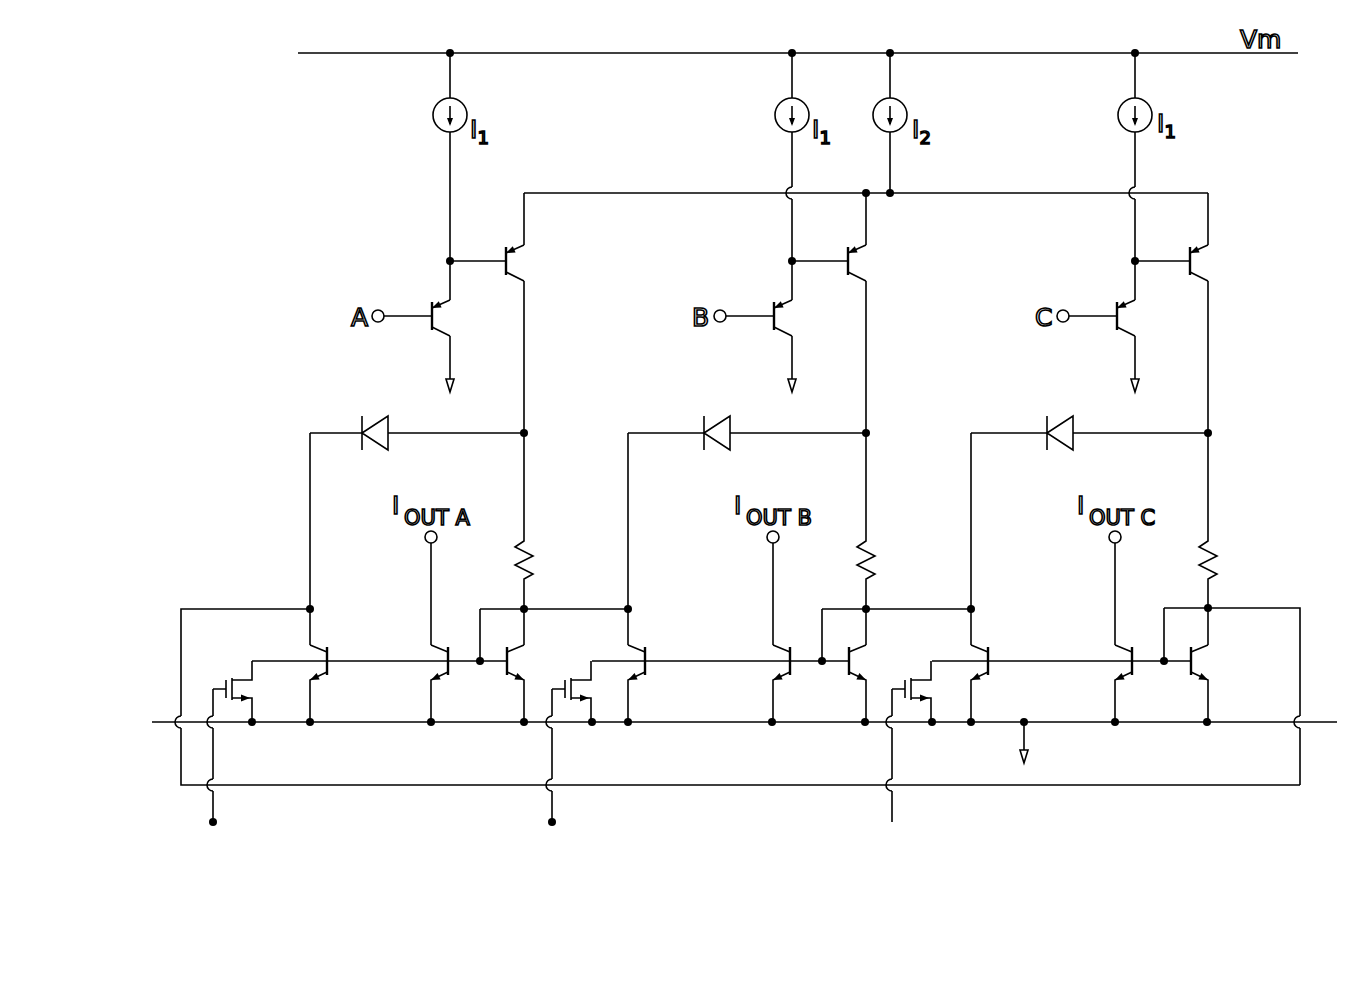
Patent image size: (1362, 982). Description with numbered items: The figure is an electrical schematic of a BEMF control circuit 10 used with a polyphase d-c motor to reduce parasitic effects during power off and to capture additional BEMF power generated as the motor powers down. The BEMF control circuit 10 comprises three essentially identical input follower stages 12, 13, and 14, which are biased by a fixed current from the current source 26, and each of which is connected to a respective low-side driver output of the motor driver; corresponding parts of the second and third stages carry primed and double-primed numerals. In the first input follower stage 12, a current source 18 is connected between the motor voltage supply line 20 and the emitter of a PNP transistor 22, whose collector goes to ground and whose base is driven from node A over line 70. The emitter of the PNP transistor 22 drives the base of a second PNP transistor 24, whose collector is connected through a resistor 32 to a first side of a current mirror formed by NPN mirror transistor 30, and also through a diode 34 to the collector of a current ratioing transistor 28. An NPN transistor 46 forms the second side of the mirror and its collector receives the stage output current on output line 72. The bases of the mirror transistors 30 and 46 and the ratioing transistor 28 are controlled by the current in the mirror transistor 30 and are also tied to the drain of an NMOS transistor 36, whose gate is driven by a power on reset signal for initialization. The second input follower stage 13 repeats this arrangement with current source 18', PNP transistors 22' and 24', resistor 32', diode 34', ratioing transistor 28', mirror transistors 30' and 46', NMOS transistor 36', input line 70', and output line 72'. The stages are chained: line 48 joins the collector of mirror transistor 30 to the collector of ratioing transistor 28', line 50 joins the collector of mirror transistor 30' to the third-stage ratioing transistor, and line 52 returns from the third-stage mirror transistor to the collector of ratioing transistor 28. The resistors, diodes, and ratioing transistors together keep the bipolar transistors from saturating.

The BEMF control circuit 10 is at (1313, 153).
The first input follower stage 12 is at (532, 170).
The second input follower stage 13 is at (745, 112).
The third input follower stage 14 is at (1089, 163).
The current source 18 is at (468, 92).
The current source 18' is at (813, 92).
The motor voltage supply line 20 is at (1030, 54).
The PNP transistor 22 is at (429, 328).
The PNP transistor 22' is at (770, 328).
The second PNP transistor 24 is at (501, 237).
The second PNP transistor 24' is at (843, 237).
The current source 26 is at (910, 93).
The current ratioing transistor 28 is at (336, 665).
The current ratioing transistor 28' is at (658, 665).
The mirror transistor 30 is at (497, 683).
The mirror transistor 30' is at (839, 683).
The resistor 32 is at (546, 548).
The resistor 32' is at (891, 548).
The diode 34 is at (417, 451).
The diode 34' is at (747, 451).
The NMOS transistor 36 is at (228, 732).
The NMOS transistor 36' is at (565, 732).
The NPN transistor 46 is at (417, 683).
The NPN transistor 46' is at (751, 683).
The line 48 is at (549, 609).
The line 50 is at (893, 609).
The line 52 is at (197, 609).
The line 70 is at (402, 339).
The output line 70' is at (744, 339).
The output line 72 is at (450, 588).
The output line 72' is at (795, 588).